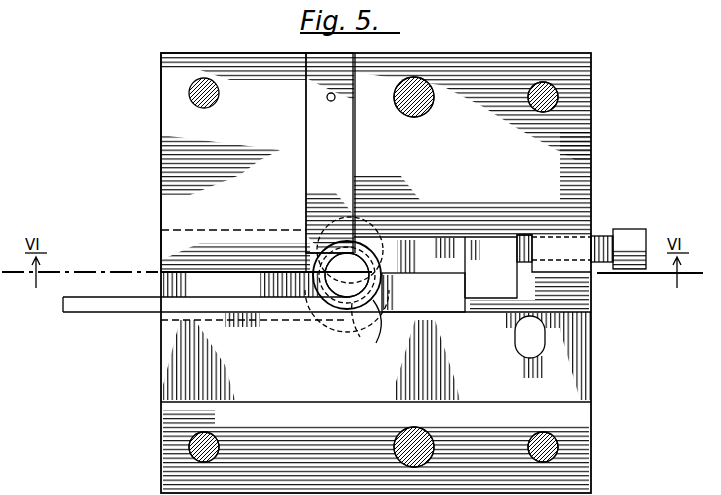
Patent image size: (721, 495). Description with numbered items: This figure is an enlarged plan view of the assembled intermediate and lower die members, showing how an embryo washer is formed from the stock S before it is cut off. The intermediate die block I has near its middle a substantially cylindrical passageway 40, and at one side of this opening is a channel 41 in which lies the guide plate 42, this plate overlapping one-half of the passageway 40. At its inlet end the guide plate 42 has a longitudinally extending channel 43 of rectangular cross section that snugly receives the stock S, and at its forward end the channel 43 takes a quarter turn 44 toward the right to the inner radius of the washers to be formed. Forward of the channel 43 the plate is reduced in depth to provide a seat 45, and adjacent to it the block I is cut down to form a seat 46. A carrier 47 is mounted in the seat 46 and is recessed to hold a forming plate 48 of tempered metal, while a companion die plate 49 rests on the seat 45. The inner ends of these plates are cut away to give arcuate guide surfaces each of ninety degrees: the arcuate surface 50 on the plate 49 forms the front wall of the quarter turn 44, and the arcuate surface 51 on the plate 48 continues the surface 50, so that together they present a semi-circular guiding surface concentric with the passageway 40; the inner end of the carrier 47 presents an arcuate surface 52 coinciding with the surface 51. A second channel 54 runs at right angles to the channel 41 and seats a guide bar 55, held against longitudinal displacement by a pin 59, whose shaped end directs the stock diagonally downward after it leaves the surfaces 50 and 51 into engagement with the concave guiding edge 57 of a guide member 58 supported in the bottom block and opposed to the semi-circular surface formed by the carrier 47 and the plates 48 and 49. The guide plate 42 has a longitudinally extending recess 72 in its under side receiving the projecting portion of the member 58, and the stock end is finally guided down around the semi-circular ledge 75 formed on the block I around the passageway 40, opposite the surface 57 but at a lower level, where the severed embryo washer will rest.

The cylindrical passageway 40 is at (362, 262).
The channel 41 is at (364, 402).
The guide plate 42 is at (172, 358).
The longitudinally extending channel 43 is at (214, 313).
The quarter turn 44 is at (340, 290).
The seat 45 is at (567, 305).
The seat 46 is at (428, 240).
The carrier 47 is at (495, 248).
The forming plate 48 is at (455, 240).
The companion die plate 49 is at (441, 300).
The arcuate surface 50 is at (383, 332).
The arcuate surface 51 is at (356, 265).
The arcuate surface 52 is at (640, 242).
The channel 54 is at (354, 150).
The guide bar 55 is at (322, 173).
The concave guiding edge 57 is at (352, 234).
The guide member 58 is at (193, 232).
The pin 59 is at (325, 100).
The longitudinally extending recess 72 is at (262, 322).
The semi-circular ledge 75 is at (347, 326).
The stock S is at (125, 305).
The intermediate die block I is at (182, 412).